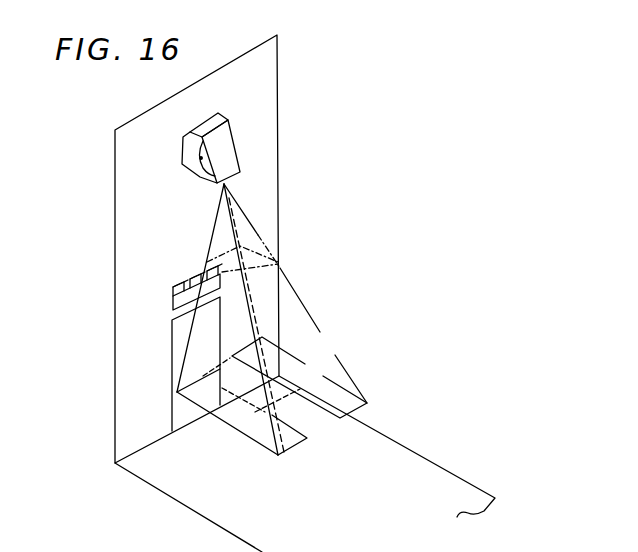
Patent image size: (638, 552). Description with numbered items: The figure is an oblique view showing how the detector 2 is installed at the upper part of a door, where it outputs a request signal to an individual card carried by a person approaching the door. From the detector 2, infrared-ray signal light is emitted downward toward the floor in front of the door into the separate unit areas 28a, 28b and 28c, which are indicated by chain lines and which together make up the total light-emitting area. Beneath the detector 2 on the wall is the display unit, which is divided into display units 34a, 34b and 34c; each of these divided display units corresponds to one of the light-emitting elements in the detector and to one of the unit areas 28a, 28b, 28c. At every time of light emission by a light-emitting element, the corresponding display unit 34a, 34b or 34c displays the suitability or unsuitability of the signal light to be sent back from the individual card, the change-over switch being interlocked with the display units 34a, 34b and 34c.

The detector 2 is at (225, 150).
The display unit 34a is at (183, 294).
The display unit 34b is at (195, 284).
The display unit 34c is at (209, 276).
The unit area 28a is at (311, 383).
The unit area 28b is at (303, 416).
The unit area 28c is at (236, 418).